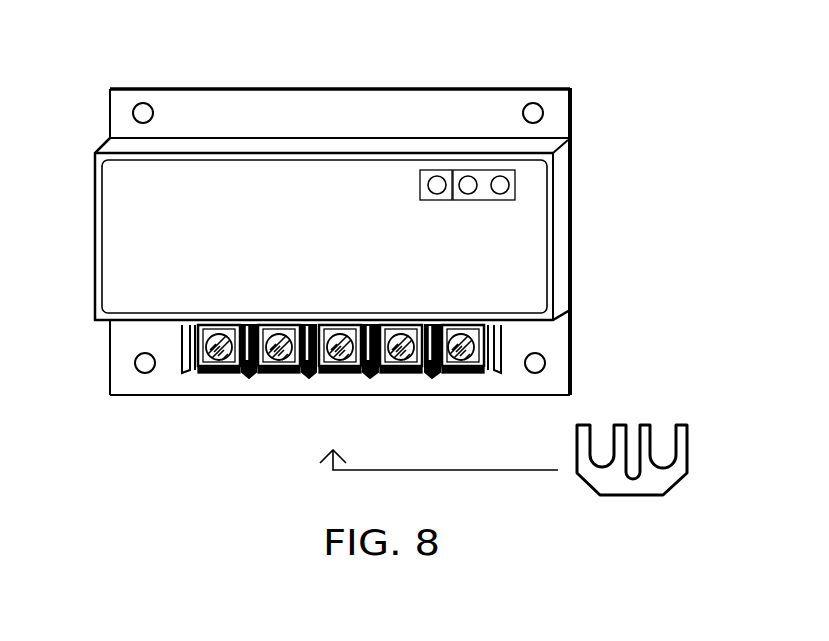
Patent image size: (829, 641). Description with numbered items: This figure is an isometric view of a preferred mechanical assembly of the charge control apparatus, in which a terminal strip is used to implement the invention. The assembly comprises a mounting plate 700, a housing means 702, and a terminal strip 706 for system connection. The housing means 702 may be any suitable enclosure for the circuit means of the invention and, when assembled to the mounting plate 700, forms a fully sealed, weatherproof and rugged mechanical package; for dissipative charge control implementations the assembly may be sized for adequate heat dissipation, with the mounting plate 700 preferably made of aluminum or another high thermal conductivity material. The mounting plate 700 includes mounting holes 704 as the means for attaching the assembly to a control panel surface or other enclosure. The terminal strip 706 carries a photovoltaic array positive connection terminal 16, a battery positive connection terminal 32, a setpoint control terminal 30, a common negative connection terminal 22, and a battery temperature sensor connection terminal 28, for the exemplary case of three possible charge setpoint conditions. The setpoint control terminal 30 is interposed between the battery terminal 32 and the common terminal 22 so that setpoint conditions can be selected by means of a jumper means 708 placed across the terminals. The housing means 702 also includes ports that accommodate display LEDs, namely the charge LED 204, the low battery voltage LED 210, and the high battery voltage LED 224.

The mounting plate 700 is at (108, 87).
The housing means 702 is at (93, 218).
The mounting holes 704 is at (130, 364).
The terminal strip 706 is at (545, 360).
The jumper means 708 is at (692, 427).
The charge LED 204 is at (437, 170).
The low battery voltage LED 210 is at (468, 170).
The high battery voltage LED 224 is at (500, 170).
The photovoltaic array "+" connection terminal 16 is at (218, 375).
The battery "+" connection terminal 32 is at (279, 375).
The setpoint control terminal 30 is at (340, 375).
The common "−" connection terminal 22 is at (401, 375).
The battery temperature sensor connection terminal 28 is at (461, 375).